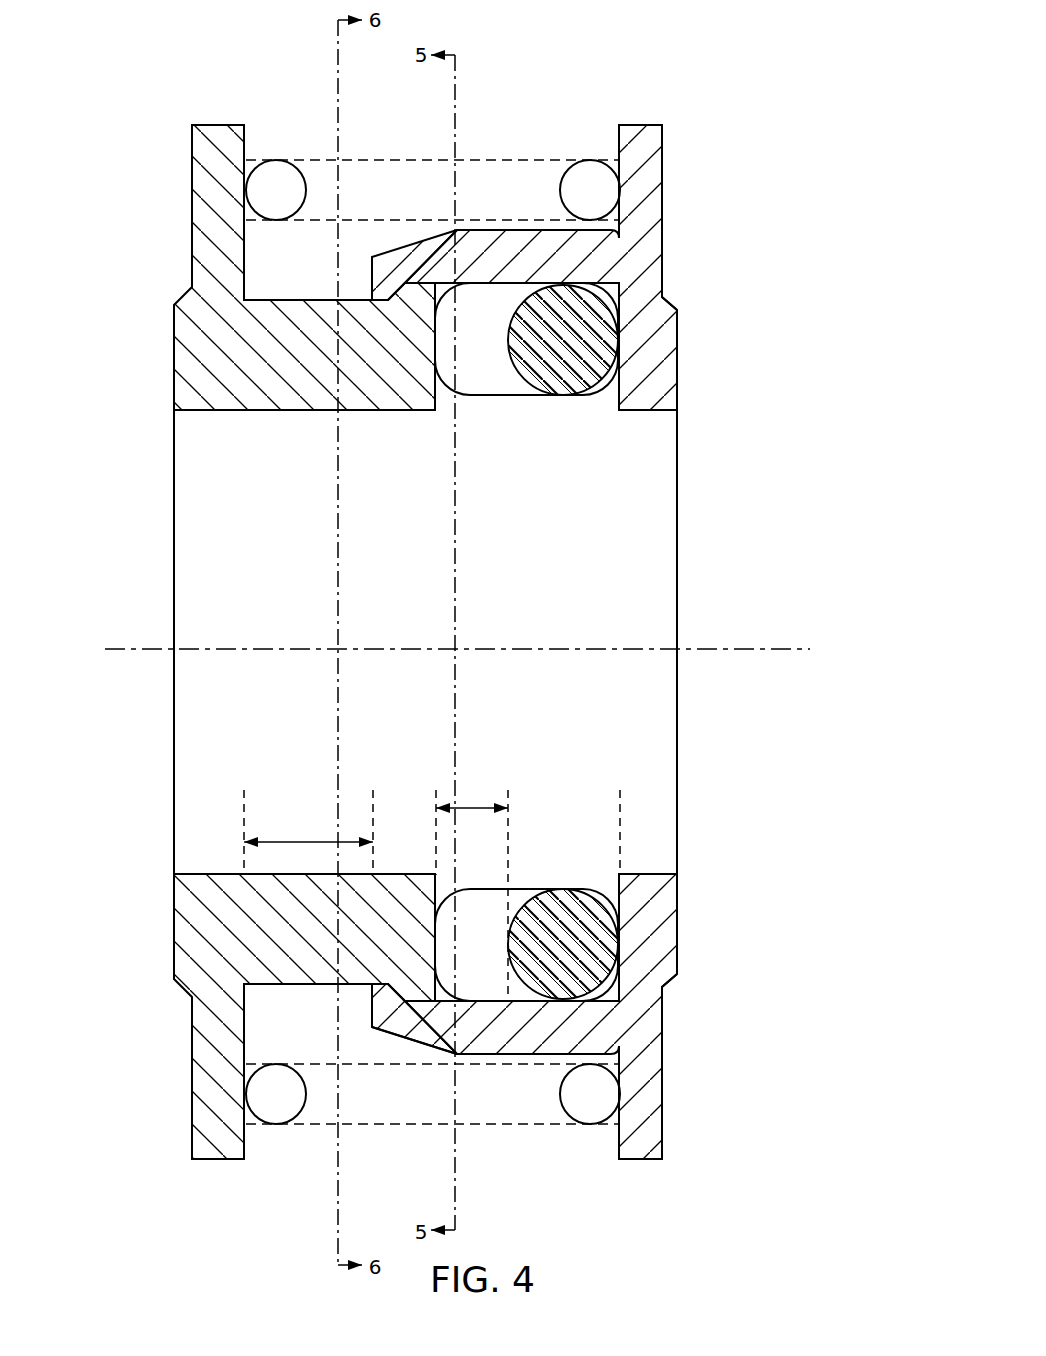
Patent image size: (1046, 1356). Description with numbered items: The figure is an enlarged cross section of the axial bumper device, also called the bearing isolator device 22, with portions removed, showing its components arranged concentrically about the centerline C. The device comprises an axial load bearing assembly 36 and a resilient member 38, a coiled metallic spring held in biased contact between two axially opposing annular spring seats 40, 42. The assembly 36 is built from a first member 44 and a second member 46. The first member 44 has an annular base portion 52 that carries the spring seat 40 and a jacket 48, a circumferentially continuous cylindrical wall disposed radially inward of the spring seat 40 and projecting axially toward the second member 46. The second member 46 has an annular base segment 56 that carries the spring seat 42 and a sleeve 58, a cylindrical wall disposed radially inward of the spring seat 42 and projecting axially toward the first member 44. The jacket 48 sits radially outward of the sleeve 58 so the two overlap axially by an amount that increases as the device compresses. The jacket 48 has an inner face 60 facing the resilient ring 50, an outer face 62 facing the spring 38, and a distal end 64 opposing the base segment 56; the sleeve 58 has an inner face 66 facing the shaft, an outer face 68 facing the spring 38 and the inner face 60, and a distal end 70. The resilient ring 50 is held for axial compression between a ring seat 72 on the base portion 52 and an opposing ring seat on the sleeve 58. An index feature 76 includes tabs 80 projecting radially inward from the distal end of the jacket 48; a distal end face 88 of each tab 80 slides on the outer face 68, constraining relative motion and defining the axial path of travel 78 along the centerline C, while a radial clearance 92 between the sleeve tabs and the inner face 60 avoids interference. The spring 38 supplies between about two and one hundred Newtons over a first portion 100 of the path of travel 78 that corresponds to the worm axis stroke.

The bearing isolator device 22 is at (740, 73).
The axial load bearing assembly 36 is at (553, 505).
The resilient member 38 is at (322, 158).
The spring seat 40 is at (619, 1146).
The spring seat 42 is at (245, 1140).
The first member 44 is at (708, 215).
The second member 46 is at (163, 248).
The jacket 48 is at (472, 224).
The resilient ring 50 is at (516, 400).
The base portion 52 is at (665, 172).
The base segment 56 is at (188, 193).
The sleeve 58 is at (305, 415).
The inner face 60 is at (471, 999).
The outer face 62 is at (515, 1058).
The distal end 64 is at (372, 996).
The inner face 66 is at (407, 874).
The outer face 68 is at (292, 986).
The distal end 70 is at (437, 883).
The ring seat 72 is at (617, 892).
The retention and alignment feature 76 is at (398, 278).
The axial path of travel 78 is at (298, 840).
The tab 80 is at (372, 292).
The distal end face 88 is at (377, 982).
The radial clearance 92 is at (454, 1001).
The first portion of the path of travel 100 is at (470, 806).
The centerline C is at (766, 652).